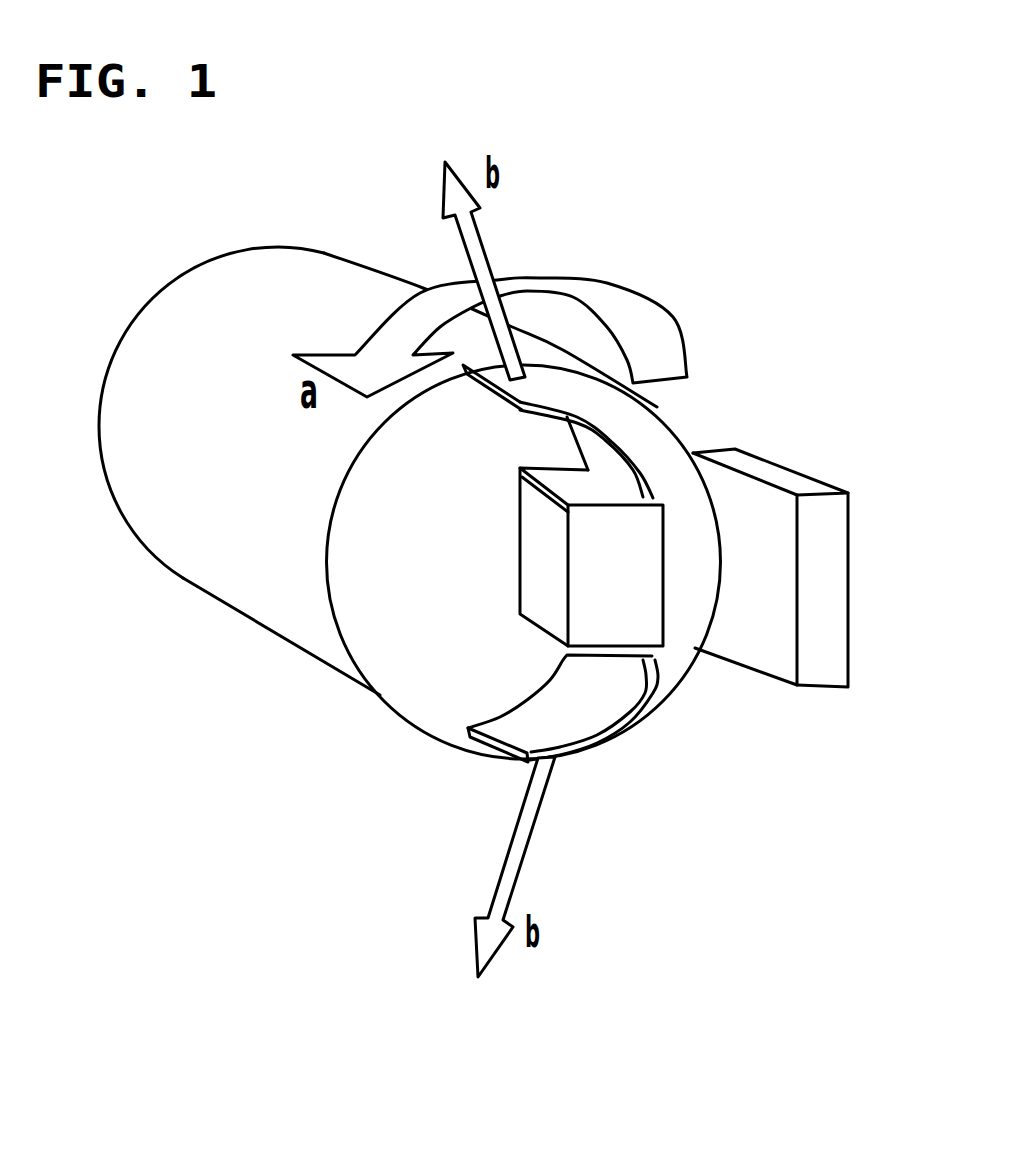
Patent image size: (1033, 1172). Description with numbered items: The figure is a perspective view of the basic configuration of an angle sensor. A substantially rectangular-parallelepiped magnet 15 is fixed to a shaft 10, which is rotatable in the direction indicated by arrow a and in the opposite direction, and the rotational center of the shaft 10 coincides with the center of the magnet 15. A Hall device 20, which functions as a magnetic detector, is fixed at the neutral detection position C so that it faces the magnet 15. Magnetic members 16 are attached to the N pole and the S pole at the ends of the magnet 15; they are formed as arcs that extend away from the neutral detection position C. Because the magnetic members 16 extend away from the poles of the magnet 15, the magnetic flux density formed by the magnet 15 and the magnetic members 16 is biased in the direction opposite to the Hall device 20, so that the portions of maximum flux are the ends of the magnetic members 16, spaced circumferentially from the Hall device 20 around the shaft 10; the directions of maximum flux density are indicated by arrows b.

The shaft 10 is at (262, 625).
The magnet 15 is at (532, 577).
The magnetic members 16 is at (625, 450).
The Hall device 20 is at (850, 600).